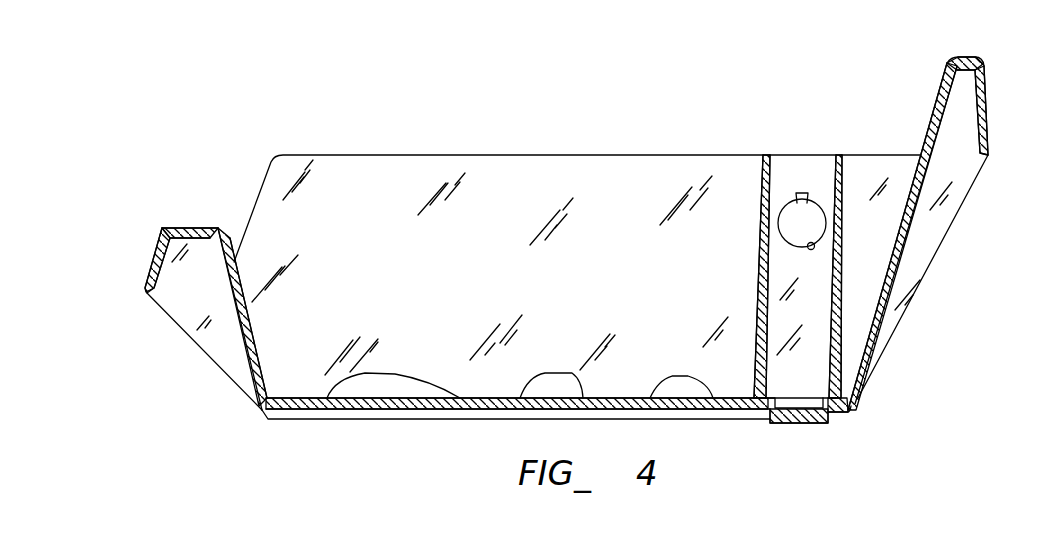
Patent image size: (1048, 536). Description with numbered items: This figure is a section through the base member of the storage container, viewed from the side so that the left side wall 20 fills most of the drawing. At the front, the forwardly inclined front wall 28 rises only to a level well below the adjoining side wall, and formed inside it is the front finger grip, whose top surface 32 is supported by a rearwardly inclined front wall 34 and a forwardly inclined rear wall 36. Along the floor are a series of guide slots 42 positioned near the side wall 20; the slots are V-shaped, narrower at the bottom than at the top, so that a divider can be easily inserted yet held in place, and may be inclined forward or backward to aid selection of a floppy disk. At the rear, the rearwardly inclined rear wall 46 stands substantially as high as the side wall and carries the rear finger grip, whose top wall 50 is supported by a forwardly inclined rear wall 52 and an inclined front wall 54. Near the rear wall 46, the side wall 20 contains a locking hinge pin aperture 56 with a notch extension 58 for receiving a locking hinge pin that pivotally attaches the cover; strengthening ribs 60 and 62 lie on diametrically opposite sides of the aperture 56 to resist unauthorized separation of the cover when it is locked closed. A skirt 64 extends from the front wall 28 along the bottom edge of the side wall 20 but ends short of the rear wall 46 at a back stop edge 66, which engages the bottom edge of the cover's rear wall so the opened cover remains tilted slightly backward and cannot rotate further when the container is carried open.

The left side wall 20 is at (268, 170).
The front wall 28 is at (193, 347).
The top surface 32 is at (184, 228).
The rearwardly inclined front wall 34 is at (152, 263).
The forwardly inclined rear wall 36 is at (246, 325).
The guide slots 42 is at (402, 380).
The rear wall 46 is at (950, 230).
The top wall 50 is at (966, 57).
The forwardly inclined rear wall 52 is at (988, 117).
The slanted wall 54 is at (937, 97).
The locking hinge pin aperture 56 is at (810, 249).
The notch extension 58 is at (800, 193).
The strengthening rib 60 is at (768, 322).
The strengthening rib 62 is at (840, 283).
The skirt 64 is at (650, 415).
The back stop edge 66 is at (828, 417).